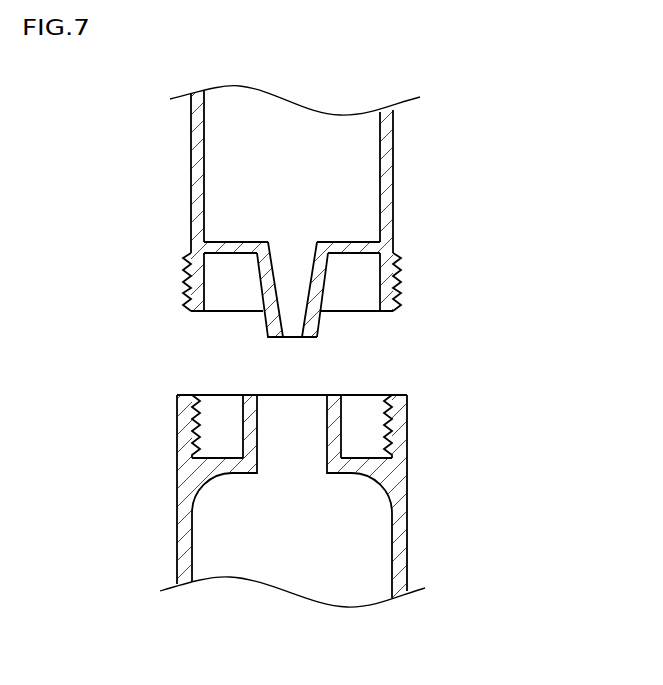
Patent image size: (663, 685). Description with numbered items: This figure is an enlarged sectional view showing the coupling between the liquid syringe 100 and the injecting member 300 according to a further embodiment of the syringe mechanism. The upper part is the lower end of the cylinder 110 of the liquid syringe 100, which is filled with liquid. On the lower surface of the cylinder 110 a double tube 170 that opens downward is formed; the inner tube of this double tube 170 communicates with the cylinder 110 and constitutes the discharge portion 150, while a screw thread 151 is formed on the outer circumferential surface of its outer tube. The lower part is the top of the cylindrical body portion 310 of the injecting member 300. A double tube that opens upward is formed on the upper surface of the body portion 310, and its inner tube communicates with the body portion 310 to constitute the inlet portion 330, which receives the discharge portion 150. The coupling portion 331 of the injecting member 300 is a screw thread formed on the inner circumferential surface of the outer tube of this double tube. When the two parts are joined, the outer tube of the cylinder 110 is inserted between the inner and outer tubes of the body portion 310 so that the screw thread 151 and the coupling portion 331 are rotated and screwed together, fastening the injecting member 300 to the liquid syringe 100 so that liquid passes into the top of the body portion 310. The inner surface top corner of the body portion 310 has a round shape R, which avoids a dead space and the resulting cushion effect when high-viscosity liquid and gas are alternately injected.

The liquid syringe 100 is at (288, 230).
The cylinder 110 is at (386, 162).
The discharge portion 150 is at (297, 297).
The screw threads 151 is at (183, 282).
The double tube 170 is at (197, 308).
The injecting member 300 is at (303, 501).
The body portion 310 is at (182, 528).
The inlet portion 330 is at (300, 427).
The coupling portion 331 is at (198, 414).
The round shape R is at (200, 491).